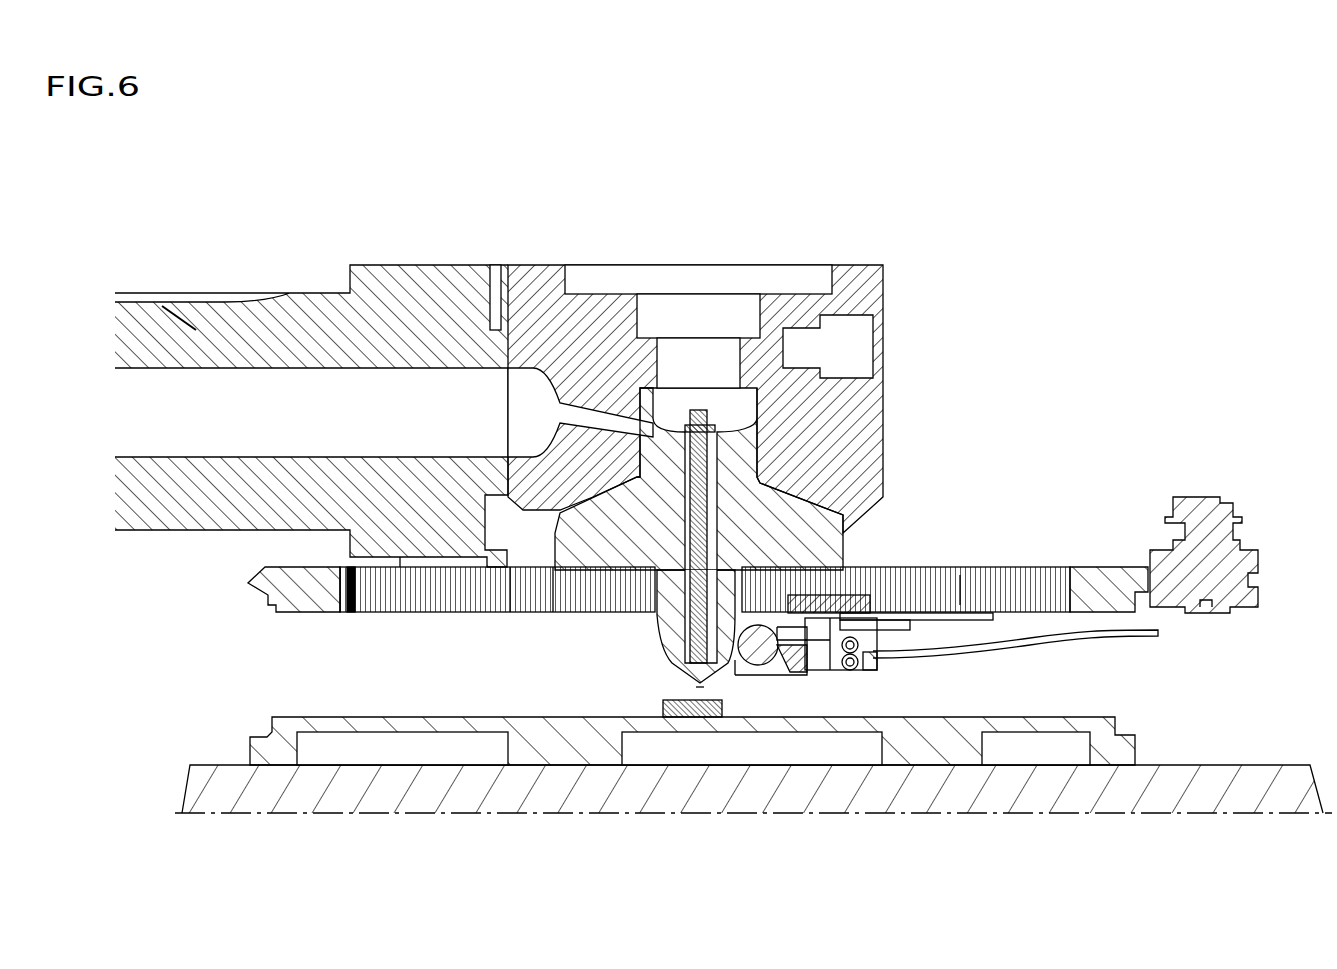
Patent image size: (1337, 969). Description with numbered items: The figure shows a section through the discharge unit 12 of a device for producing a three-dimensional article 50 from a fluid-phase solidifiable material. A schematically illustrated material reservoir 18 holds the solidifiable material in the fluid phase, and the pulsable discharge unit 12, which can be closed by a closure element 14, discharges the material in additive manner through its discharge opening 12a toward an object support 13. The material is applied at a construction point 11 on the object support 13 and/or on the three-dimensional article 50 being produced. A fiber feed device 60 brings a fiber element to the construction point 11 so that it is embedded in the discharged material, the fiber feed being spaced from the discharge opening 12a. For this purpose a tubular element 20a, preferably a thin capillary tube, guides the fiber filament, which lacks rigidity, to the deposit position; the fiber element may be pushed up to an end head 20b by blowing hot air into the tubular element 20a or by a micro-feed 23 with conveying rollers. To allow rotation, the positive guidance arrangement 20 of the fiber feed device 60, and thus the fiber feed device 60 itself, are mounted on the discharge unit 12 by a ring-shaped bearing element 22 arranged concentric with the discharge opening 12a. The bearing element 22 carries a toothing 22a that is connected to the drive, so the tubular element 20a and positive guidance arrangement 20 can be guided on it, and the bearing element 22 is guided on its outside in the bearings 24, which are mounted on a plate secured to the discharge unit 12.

The construction point 11 is at (697, 695).
The discharge unit 12 is at (897, 344).
The discharge opening 12a is at (700, 686).
The object support 13 is at (927, 742).
The closure element 14 is at (728, 417).
The material reservoir 18 is at (275, 427).
The positive guidance arrangement 20 is at (1040, 648).
The tubular element 20a is at (1032, 641).
The end head 20b is at (758, 668).
The bearing element 22 is at (298, 596).
The toothing 22a is at (968, 594).
The micro-feed 23 is at (853, 628).
The bearings 24 is at (1202, 512).
The three-dimensional article 50 is at (702, 682).
The fiber feed device 60 is at (884, 673).